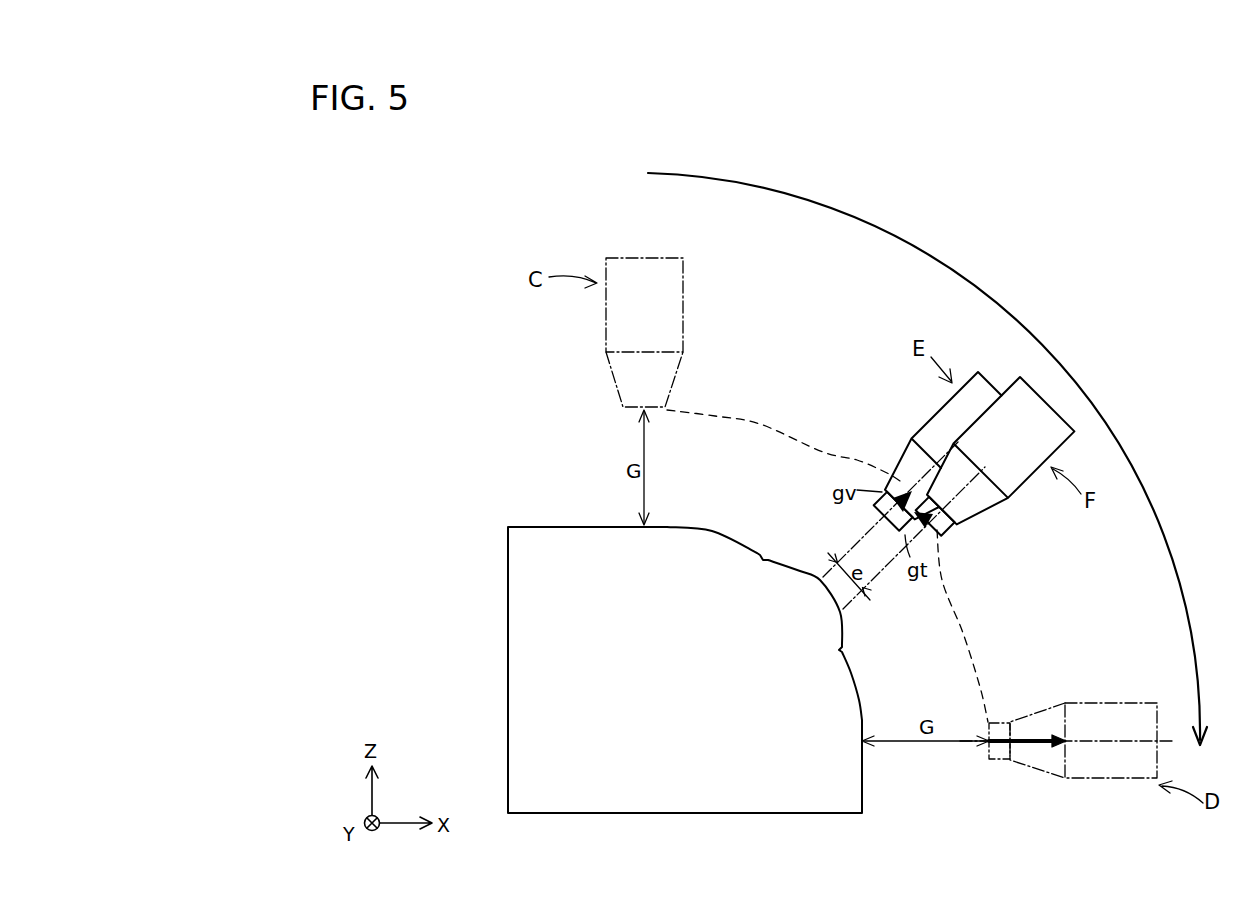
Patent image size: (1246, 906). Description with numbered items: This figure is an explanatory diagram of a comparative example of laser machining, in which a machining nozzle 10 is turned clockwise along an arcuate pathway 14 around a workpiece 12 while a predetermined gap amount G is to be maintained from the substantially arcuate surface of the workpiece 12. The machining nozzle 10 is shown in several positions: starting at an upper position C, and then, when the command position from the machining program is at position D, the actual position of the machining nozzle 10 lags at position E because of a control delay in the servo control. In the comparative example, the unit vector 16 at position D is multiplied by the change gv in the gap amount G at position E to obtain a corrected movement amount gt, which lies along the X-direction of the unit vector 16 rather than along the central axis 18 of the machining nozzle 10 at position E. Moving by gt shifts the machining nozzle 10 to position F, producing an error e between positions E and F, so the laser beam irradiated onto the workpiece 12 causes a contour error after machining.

The machining nozzle 10 is at (641, 258).
The workpiece 12 is at (530, 607).
The pathway 14 is at (704, 409).
The unit vector 16 is at (1023, 745).
The central axis 18 is at (856, 545).